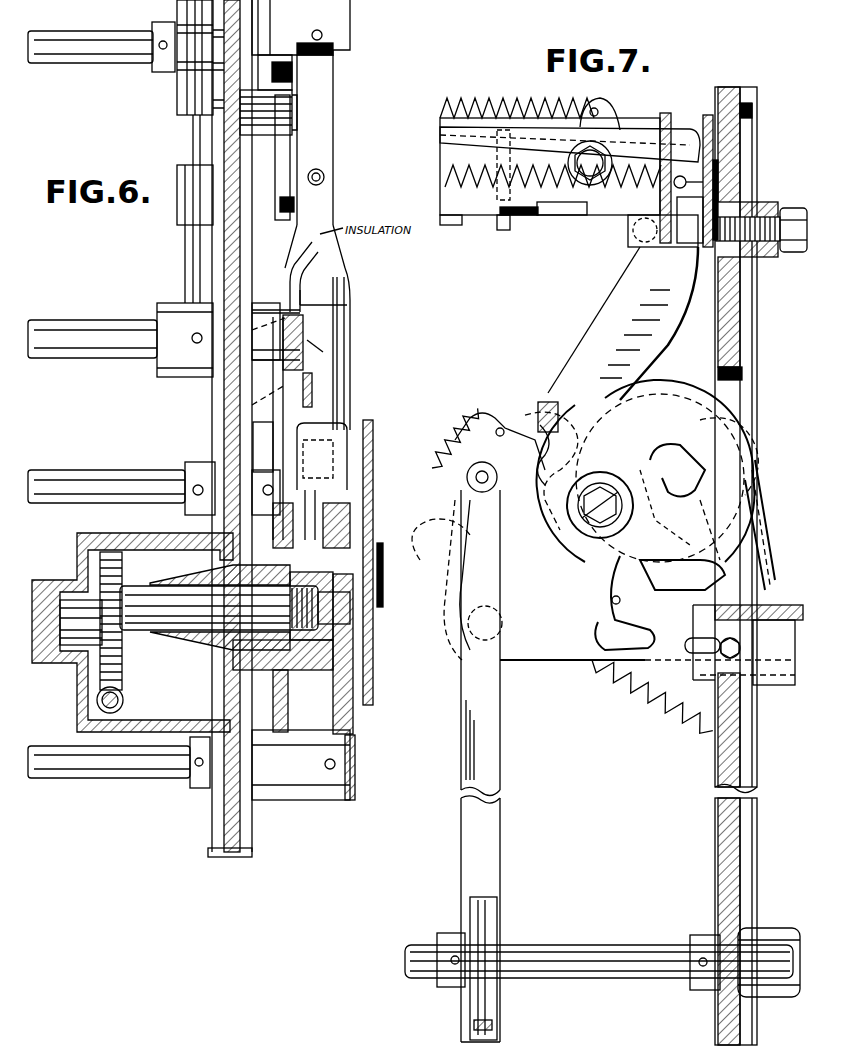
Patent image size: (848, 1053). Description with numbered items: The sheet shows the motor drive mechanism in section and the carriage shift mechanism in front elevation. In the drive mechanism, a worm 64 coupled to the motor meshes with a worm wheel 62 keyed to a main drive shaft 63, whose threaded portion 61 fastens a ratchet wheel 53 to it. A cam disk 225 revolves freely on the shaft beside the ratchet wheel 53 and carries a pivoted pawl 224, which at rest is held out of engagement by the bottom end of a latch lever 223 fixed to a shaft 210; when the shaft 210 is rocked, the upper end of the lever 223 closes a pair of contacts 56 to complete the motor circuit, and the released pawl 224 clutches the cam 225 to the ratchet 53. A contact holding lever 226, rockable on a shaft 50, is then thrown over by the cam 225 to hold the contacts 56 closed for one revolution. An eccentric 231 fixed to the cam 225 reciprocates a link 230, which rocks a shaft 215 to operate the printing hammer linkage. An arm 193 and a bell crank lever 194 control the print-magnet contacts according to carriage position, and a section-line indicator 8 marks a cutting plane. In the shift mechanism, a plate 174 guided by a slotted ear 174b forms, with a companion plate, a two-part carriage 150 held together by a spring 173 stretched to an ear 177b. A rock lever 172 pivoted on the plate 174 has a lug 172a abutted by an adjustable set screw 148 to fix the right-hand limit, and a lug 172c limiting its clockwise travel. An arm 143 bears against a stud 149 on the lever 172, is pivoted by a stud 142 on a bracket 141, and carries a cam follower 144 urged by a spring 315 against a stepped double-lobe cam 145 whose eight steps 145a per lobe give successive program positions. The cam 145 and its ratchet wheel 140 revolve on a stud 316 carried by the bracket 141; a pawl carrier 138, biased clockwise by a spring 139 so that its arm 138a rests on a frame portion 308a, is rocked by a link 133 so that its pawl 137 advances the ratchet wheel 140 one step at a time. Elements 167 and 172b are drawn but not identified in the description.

In FIG. 6, the arm 193 is at (292, 72).
In FIG. 6, the bell crank lever 194 is at (290, 148).
In FIG. 6, the contacts 56 is at (325, 163).
In FIG. 6, the contact holding lever 226 is at (288, 268).
In FIG. 6, the latch lever 223 is at (300, 297).
In FIG. 6, the section line 8- 8 is at (357, 296).
In FIG. 6, the shaft 215 is at (128, 338).
In FIG. 6, the link 230 is at (283, 392).
In FIG. 6, the shaft 50 is at (262, 452).
In FIG. 6, the shaft 210 is at (115, 478).
In FIG. 6, the pawl 224 is at (290, 536).
In FIG. 6, the main drive shaft 63 is at (190, 610).
In FIG. 6, the threaded portion 61 is at (292, 600).
In FIG. 6, the worm wheel 62 is at (122, 683).
In FIG. 6, the worm 64 is at (124, 700).
In FIG. 6, the eccentric 231 is at (275, 672).
In FIG. 6, the ratchet wheel 53 is at (312, 672).
In FIG. 6, the cam disk 225 is at (285, 735).
In FIG. 7, the spring 167 is at (497, 110).
In FIG. 7, the rock lever 172 is at (600, 117).
In FIG. 7, the slotted ear 174b is at (665, 115).
In FIG. 7, the ear 177b is at (706, 112).
In FIG. 7, the spring 173 is at (470, 176).
In FIG. 7, the plate 174 is at (453, 212).
In FIG. 7, the lever extension 172b is at (498, 230).
In FIG. 7, the lug 172c is at (521, 216).
In FIG. 7, the carriage 150 is at (562, 222).
In FIG. 7, the stud 149 is at (648, 222).
In FIG. 7, the lug 172a is at (740, 200).
In FIG. 7, the set screw 148 is at (757, 250).
In FIG. 7, the arm 143 is at (628, 318).
In FIG. 7, the pawl carrier 138 is at (615, 405).
In FIG. 7, the ratchet wheel 140 is at (662, 455).
In FIG. 7, the pawl 137 is at (478, 432).
In FIG. 7, the steps 145a is at (770, 450).
In FIG. 7, the cam follower 144 is at (546, 474).
In FIG. 7, the stud 316 is at (600, 522).
In FIG. 7, the arm 138a is at (752, 525).
In FIG. 7, the portion of the frame 308a is at (768, 585).
In FIG. 7, the stepped cam 145 is at (462, 560).
In FIG. 7, the spring 139 is at (690, 575).
In FIG. 7, the stud 142 is at (466, 660).
In FIG. 7, the bracket 141 is at (547, 648).
In FIG. 7, the spring 315 is at (688, 712).
In FIG. 7, the link 133 is at (487, 877).